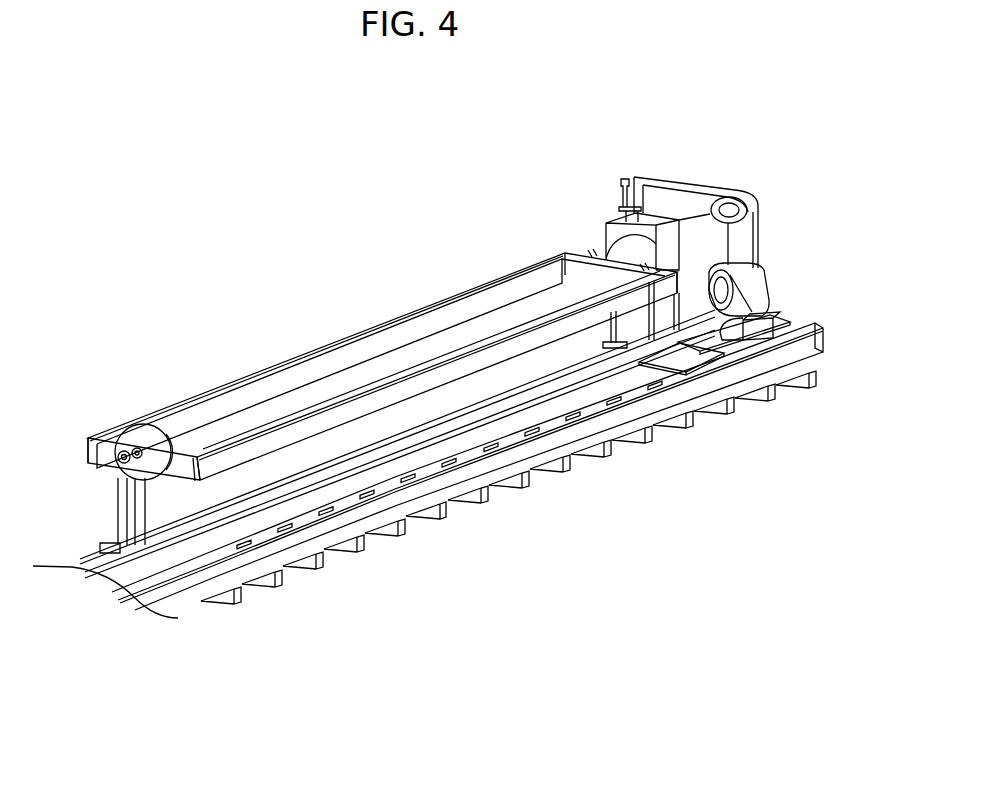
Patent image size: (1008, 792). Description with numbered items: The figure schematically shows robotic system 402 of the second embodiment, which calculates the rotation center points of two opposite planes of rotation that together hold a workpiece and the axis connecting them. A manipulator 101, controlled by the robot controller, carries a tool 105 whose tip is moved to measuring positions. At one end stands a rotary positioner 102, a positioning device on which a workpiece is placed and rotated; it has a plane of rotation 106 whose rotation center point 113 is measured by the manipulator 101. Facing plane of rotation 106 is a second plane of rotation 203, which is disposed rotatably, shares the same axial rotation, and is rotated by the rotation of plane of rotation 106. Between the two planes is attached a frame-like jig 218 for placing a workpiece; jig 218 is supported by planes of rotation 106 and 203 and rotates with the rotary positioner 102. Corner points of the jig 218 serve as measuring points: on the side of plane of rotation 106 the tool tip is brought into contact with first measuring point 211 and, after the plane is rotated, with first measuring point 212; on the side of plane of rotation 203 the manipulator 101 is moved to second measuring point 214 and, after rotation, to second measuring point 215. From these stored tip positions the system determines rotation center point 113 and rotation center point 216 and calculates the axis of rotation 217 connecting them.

The manipulator 101 is at (748, 253).
The rotary positioner 102 is at (666, 208).
The tool 105 is at (625, 180).
The plane of rotation 106 is at (605, 225).
The rotation center point 113 is at (622, 262).
The plane of rotation 203 is at (150, 468).
The first measuring point 211 is at (678, 271).
The first measuring point 212 is at (565, 253).
The second measuring point 214 is at (198, 458).
The second measuring point 215 is at (88, 438).
The rotation center point 216 is at (148, 448).
The axis of rotation 217 is at (418, 340).
The jig 218 is at (433, 295).
The robotic system 402 is at (508, 541).